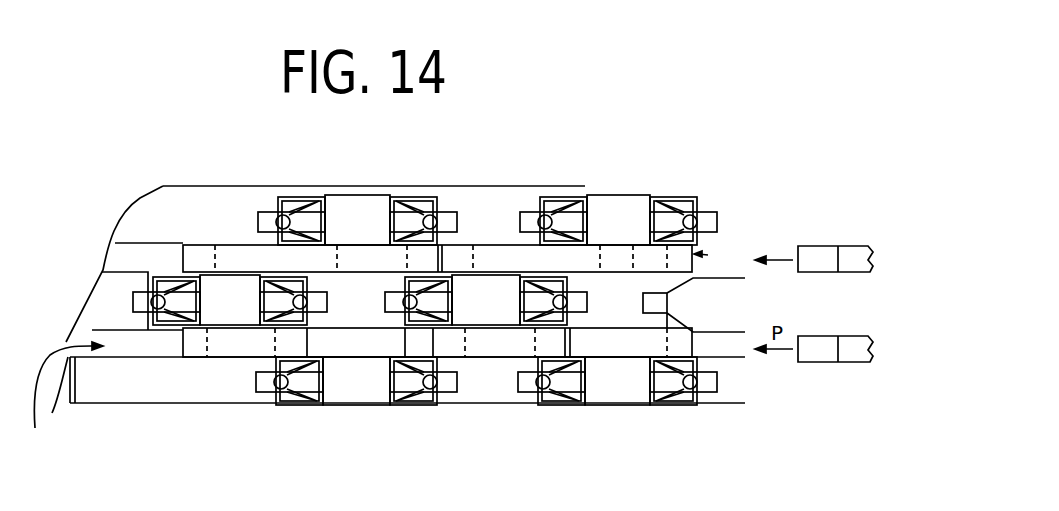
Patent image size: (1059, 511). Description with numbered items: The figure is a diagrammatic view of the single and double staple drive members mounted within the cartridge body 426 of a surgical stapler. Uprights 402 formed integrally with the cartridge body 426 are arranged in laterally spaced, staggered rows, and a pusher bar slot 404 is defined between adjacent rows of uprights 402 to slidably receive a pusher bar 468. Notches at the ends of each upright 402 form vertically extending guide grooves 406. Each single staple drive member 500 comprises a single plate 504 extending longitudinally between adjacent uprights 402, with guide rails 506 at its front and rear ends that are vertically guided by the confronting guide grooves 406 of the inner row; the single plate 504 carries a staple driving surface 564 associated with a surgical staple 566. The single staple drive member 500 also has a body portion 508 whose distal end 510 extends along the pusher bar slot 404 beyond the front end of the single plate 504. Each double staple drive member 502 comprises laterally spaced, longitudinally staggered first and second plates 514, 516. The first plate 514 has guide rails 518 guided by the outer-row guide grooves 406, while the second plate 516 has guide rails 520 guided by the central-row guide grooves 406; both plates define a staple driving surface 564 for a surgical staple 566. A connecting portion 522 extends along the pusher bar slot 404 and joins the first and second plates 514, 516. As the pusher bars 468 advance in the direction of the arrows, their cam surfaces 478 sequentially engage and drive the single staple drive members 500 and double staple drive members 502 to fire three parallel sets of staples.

The uprights 402 is at (466, 228).
The pusher bar slot 404 is at (412, 350).
The guide grooves 406 is at (516, 388).
The cartridge body 426 is at (125, 410).
The pusher bar 468 is at (852, 352).
The cam surfaces 478 is at (822, 352).
The single staple drive member 500 is at (636, 188).
The double staple drive member 502 is at (233, 364).
The single plate 504 is at (335, 233).
The guide rails 506 is at (717, 218).
The body portion 508 is at (546, 269).
The distal end 510 is at (438, 262).
The first plate 514 is at (639, 386).
The second plate 516 is at (509, 313).
The guide rails 518 is at (257, 381).
The guide rails 520 is at (133, 297).
The connecting portion 522 is at (520, 352).
The staple driving surface 564 is at (332, 219).
The surgical staple 566 is at (428, 385).